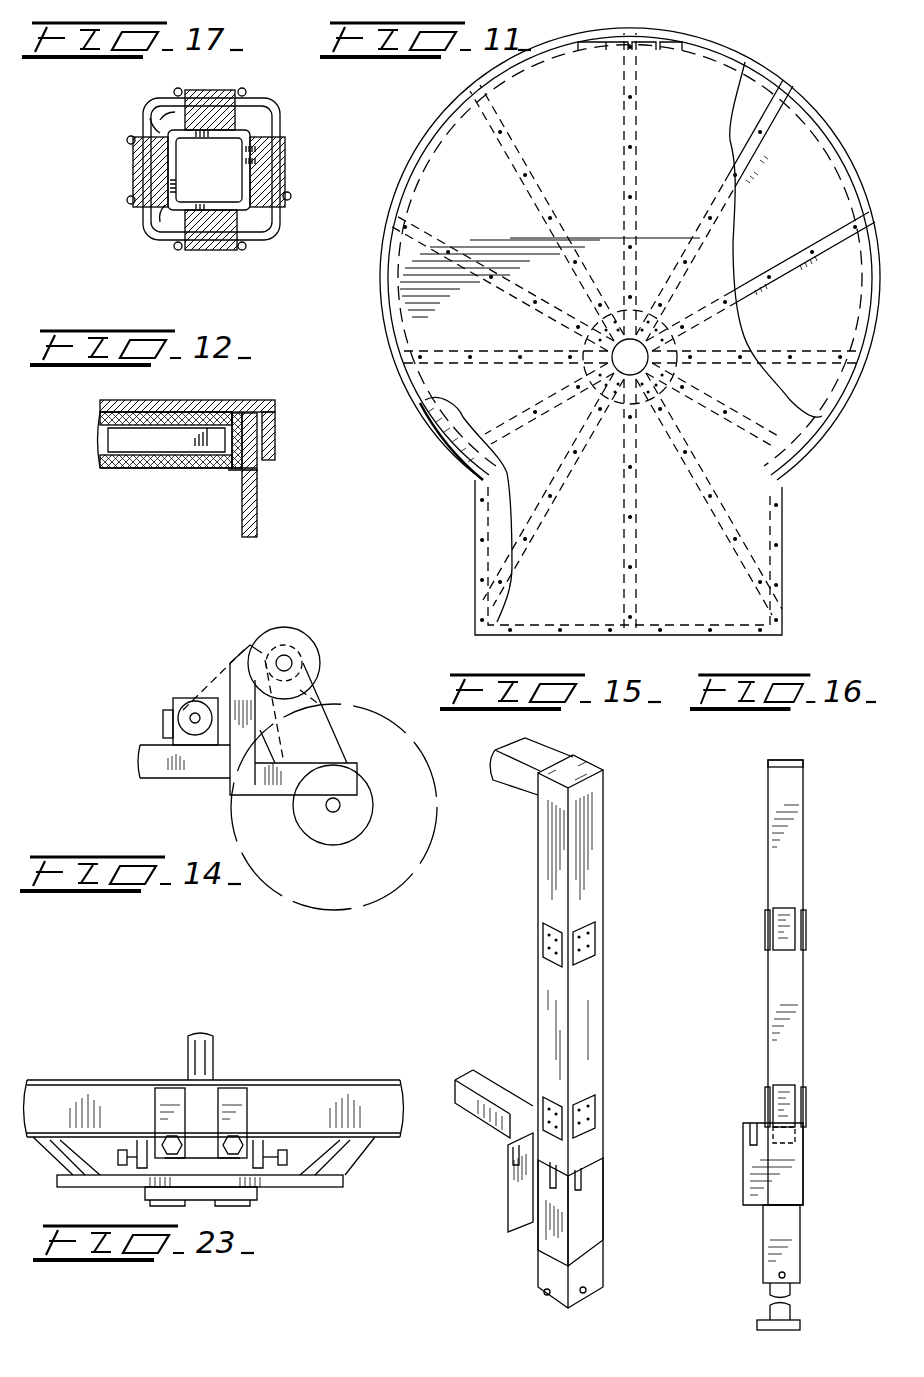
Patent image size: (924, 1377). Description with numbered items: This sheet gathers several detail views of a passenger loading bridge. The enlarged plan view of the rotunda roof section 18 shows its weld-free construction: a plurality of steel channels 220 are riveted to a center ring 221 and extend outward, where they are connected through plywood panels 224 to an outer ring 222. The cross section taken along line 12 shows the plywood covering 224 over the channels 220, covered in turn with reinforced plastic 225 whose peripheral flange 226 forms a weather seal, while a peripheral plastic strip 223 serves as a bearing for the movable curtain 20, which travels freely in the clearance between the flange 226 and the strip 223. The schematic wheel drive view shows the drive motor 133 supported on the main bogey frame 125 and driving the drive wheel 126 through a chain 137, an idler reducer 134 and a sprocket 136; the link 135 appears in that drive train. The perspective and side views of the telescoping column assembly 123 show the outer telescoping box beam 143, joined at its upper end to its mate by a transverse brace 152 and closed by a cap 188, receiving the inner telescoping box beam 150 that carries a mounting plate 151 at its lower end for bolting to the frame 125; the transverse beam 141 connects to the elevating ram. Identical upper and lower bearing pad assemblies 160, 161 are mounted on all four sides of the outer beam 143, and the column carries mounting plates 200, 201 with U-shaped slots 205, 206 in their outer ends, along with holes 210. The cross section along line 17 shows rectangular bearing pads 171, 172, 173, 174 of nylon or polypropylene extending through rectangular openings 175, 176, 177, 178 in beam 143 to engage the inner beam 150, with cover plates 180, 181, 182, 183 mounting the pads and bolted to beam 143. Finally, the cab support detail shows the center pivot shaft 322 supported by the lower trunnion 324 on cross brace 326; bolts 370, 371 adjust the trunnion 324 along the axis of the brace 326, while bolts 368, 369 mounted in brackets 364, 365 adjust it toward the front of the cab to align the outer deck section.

In FIG. 11, the section line 12— 12 is at (402, 128).
In FIG. 16, the section line 17— 17 is at (730, 952).
In FIG. 11, the roof section 18 is at (412, 422).
In FIG. 12, the movable curtain 20 is at (262, 490).
In FIG. 15, the telescoping column assembly 123 is at (604, 1048).
In FIG. 16, the telescoping column assembly 123 is at (762, 825).
In FIG. 14, the main bogey frame 125 is at (222, 778).
In FIG. 14, the drive wheel 126 is at (368, 712).
In FIG. 14, the drive motor 133 is at (165, 708).
In FIG. 14, the idler reducer 134 is at (318, 652).
In FIG. 14, the link 135 is at (322, 700).
In FIG. 14, the sprocket 136 is at (372, 835).
In FIG. 14, the chain 137 is at (230, 672).
In FIG. 15, the transverse beam 141 is at (488, 1090).
In FIG. 17, the outer telescoping box beam 143 is at (148, 236).
In FIG. 15, the outer telescoping box beam 143 is at (545, 998).
In FIG. 16, the outer telescoping box beam 143 is at (795, 845).
In FIG. 17, the inner telescoping box beam 150 is at (255, 134).
In FIG. 16, the inner telescoping box beam 150 is at (795, 1305).
In FIG. 16, the mounting plate 151 is at (760, 1325).
In FIG. 15, the transverse brace 152 is at (525, 755).
In FIG. 15, the upper bearing pad assembly 160 is at (590, 945).
In FIG. 16, the upper bearing pad assembly 160 is at (768, 915).
In FIG. 15, the lower bearing pad assembly 161 is at (593, 1136).
In FIG. 16, the lower bearing pad assembly 161 is at (768, 1103).
In FIG. 17, the bearing pad 171 is at (243, 232).
In FIG. 17, the bearing pad 172 is at (258, 148).
In FIG. 17, the bearing pad 173 is at (165, 110).
In FIG. 17, the bearing pad 174 is at (160, 206).
In FIG. 17, the rectangular opening 175 is at (182, 245).
In FIG. 17, the rectangular opening 176 is at (288, 194).
In FIG. 17, the rectangular opening 177 is at (242, 97).
In FIG. 17, the rectangular opening 178 is at (150, 118).
In FIG. 17, the cover plate 180 is at (210, 251).
In FIG. 17, the cover plate 181 is at (285, 172).
In FIG. 17, the cover plate 182 is at (211, 91).
In FIG. 17, the cover plate 183 is at (133, 182).
In FIG. 15, the cap 188 is at (568, 768).
In FIG. 16, the cap 188 is at (778, 762).
In FIG. 15, the mounting plate 200 is at (595, 1215).
In FIG. 16, the mounting plate 200 is at (750, 1178).
In FIG. 15, the mounting plate 201 is at (508, 1205).
In FIG. 15, the U-shaped slot 205 is at (570, 1165).
In FIG. 15, the U-shaped slot 206 is at (516, 1163).
In FIG. 15, the hole 210 is at (590, 1288).
In FIG. 16, the hole 210 is at (776, 1276).
In FIG. 12, the steel channel 220 is at (125, 440).
In FIG. 11, the steel channel 220 is at (785, 270).
In FIG. 11, the center ring 221 is at (622, 318).
In FIG. 12, the outer ring 222 is at (235, 462).
In FIG. 11, the outer ring 222 is at (783, 88).
In FIG. 12, the peripheral plastic strip 223 is at (241, 472).
In FIG. 12, the plywood covering 224 is at (210, 412).
In FIG. 12, the reinforced plastic 225 is at (255, 405).
In FIG. 12, the peripheral flange 226 is at (278, 440).
In FIG. 23, the center pivot shaft 322 is at (200, 1045).
In FIG. 23, the lower trunnion 324 is at (240, 1178).
In FIG. 23, the cross brace 326 is at (315, 1082).
In FIG. 23, the bracket 364 is at (170, 1095).
In FIG. 23, the bracket 365 is at (232, 1095).
In FIG. 23, the bolt 368 is at (165, 1152).
In FIG. 23, the bolt 369 is at (238, 1145).
In FIG. 23, the bolt 370 is at (122, 1150).
In FIG. 23, the bolt 371 is at (285, 1152).